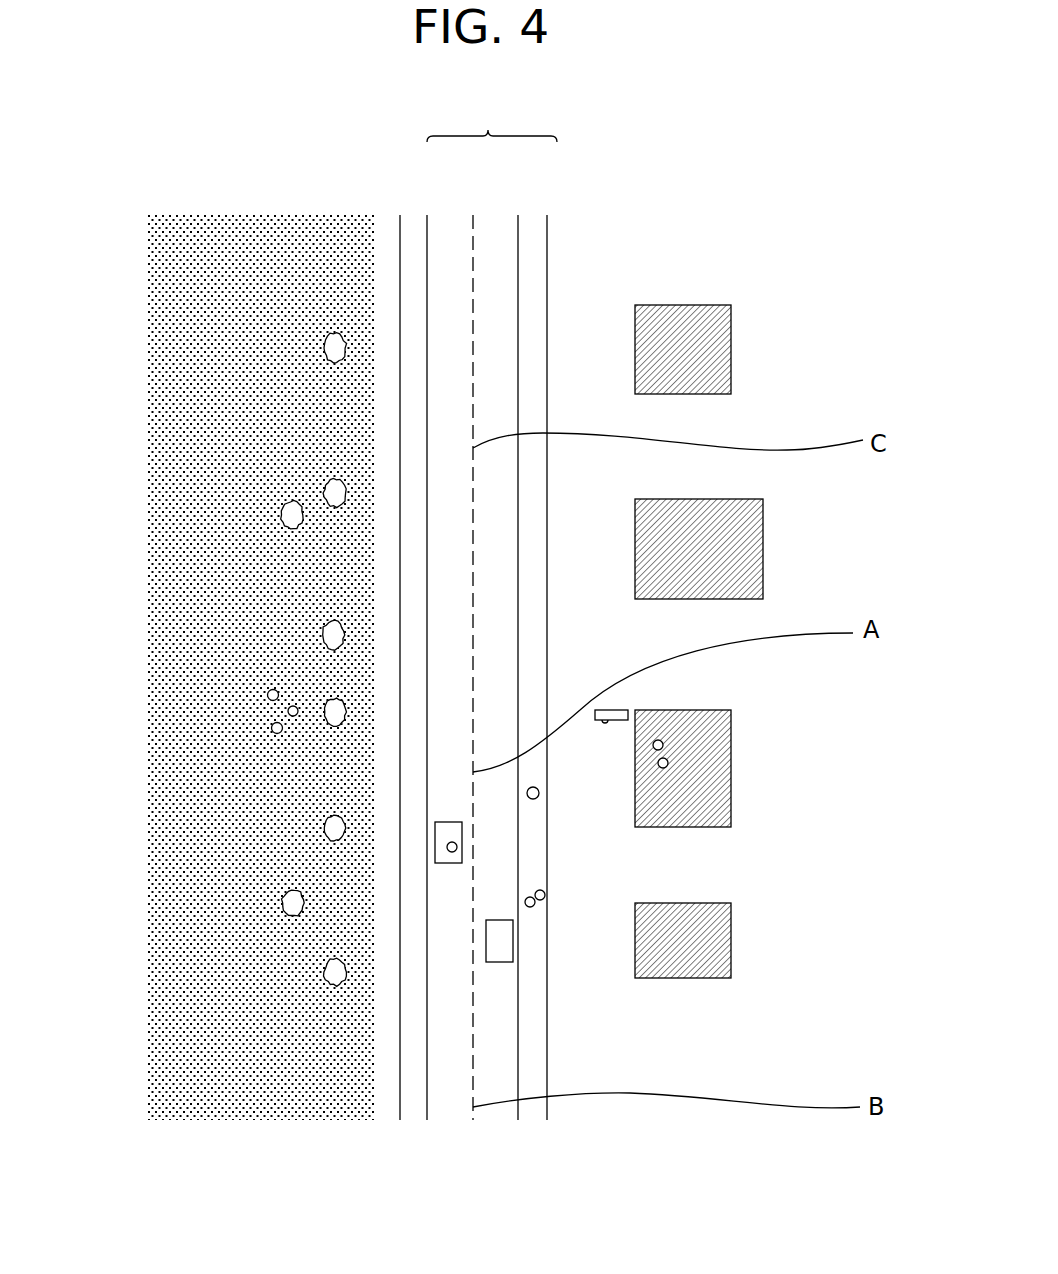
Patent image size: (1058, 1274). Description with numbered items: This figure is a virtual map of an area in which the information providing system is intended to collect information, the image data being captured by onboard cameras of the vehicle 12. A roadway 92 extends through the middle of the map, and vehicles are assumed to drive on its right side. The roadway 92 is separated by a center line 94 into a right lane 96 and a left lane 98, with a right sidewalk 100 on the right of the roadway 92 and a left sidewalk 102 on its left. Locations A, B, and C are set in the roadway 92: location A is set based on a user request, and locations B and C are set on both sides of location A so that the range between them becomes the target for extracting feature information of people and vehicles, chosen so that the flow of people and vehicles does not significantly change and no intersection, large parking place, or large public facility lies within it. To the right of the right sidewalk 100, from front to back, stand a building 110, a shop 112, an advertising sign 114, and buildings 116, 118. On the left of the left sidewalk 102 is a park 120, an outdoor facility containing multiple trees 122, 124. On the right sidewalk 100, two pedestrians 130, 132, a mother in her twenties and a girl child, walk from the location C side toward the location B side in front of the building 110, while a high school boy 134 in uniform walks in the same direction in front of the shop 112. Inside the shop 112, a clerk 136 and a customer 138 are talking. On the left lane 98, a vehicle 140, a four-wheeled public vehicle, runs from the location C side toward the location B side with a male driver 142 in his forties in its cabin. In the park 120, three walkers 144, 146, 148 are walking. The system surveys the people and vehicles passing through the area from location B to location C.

The vehicle 12 is at (505, 962).
The roadway 92 is at (492, 121).
The center line 94 is at (476, 225).
The right lane 96 is at (500, 225).
The left lane 98 is at (447, 225).
The right sidewalk 100 is at (533, 225).
The left sidewalk 102 is at (413, 225).
The building 110 is at (731, 940).
The shop 112 is at (731, 730).
The advertising sign 114 is at (627, 710).
The building 116 is at (763, 553).
The building 118 is at (731, 340).
The park 120 is at (150, 868).
The tree 122 is at (325, 823).
The tree 124 is at (327, 723).
The pedestrian 130 is at (536, 908).
The pedestrian 132 is at (545, 890).
The high school boy 134 is at (538, 797).
The clerk 136 is at (668, 764).
The customer 138 is at (663, 745).
The vehicle 140 is at (452, 863).
The male driver 142 is at (447, 850).
The walker 144 is at (272, 728).
The walker 146 is at (288, 710).
The walker 148 is at (268, 694).